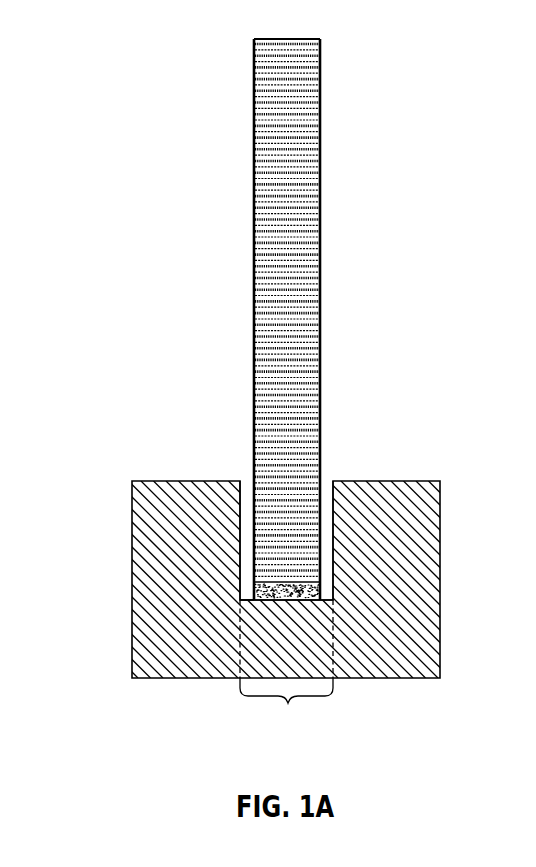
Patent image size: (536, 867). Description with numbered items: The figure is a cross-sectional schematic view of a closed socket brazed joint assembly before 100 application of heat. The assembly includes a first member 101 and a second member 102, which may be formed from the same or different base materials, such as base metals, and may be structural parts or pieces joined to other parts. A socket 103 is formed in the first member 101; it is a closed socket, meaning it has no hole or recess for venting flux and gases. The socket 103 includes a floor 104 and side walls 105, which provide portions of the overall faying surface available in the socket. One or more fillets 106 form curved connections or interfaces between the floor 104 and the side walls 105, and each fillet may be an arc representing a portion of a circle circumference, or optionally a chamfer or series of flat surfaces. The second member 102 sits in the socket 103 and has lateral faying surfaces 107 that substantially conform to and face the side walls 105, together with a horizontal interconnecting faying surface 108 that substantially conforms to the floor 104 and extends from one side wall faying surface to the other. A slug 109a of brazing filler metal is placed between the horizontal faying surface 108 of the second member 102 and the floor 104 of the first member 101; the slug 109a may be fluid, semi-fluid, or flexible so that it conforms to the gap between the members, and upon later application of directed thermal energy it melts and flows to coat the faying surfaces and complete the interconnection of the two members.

The closed socket brazed joint assembly before application of heat 100 is at (124, 32).
The first member 101 is at (115, 542).
The second member 102 is at (240, 69).
The socket 103 is at (288, 702).
The floor 104 is at (320, 602).
The side walls 105 is at (240, 512).
The fillets 106 is at (330, 594).
The faying surfaces 107 is at (254, 456).
The faying surface 108 is at (283, 565).
The slug 109a is at (252, 599).